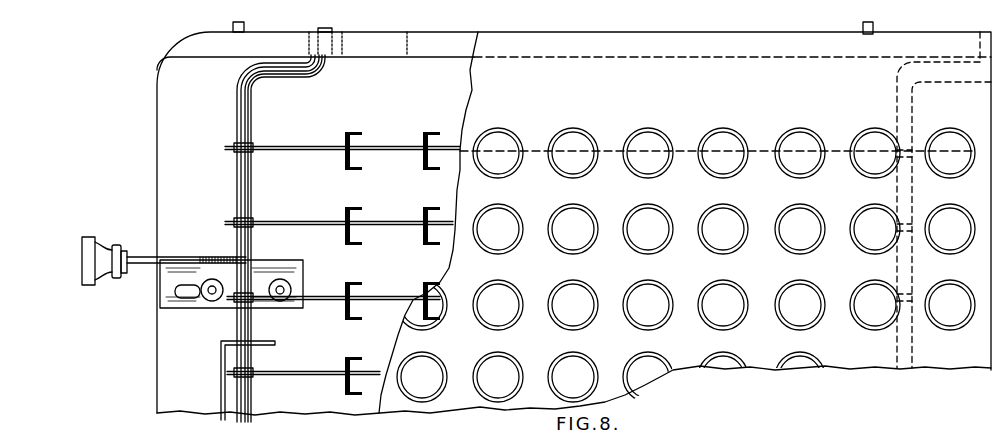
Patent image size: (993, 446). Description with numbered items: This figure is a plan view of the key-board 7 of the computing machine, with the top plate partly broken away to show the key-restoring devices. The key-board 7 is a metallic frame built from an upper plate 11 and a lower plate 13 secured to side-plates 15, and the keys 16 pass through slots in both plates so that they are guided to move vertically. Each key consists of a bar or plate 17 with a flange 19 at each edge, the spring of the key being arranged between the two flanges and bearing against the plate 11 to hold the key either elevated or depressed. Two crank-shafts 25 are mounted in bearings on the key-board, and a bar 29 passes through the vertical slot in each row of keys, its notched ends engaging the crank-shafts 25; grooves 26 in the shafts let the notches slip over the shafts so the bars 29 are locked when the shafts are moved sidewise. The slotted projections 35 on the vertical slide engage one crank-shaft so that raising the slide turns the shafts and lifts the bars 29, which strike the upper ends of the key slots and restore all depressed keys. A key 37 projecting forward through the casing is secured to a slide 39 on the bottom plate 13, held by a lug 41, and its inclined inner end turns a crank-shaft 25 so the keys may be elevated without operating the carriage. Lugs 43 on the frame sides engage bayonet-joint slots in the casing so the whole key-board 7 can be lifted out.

The key-board 7 is at (604, 47).
The upper plate 11 is at (514, 93).
The lower plate 13 is at (421, 97).
The side-plates 15 is at (433, 37).
The keys 16 is at (653, 134).
The bar or plate 17 is at (345, 163).
The flange 19 is at (356, 133).
The crank-shafts 25 is at (237, 101).
The grooves 26 is at (234, 142).
The bar 29 is at (297, 147).
The slotted projections 35 is at (263, 348).
The key 37 is at (127, 255).
The slide 39 is at (191, 308).
The lug 41 is at (212, 279).
The lugs or projections 43 is at (247, 26).